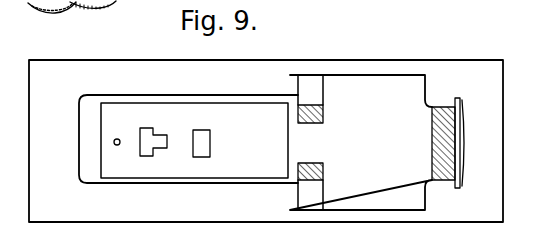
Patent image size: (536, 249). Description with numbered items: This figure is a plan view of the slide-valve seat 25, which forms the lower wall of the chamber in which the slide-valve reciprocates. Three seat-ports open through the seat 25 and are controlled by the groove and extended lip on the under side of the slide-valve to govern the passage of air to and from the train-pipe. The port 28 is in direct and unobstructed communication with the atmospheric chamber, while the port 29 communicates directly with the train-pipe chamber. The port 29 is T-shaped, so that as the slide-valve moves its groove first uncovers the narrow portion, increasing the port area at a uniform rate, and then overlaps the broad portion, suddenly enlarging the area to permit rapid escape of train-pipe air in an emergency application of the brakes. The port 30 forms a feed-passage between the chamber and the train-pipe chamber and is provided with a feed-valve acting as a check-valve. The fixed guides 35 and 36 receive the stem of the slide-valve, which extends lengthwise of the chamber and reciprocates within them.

The valve-seat 25 is at (120, 184).
The seat-port 28 is at (211, 140).
The seat-port 29 is at (150, 147).
The seat-port 30 is at (117, 139).
The fixed guide 35 is at (325, 117).
The fixed guide 36 is at (432, 147).